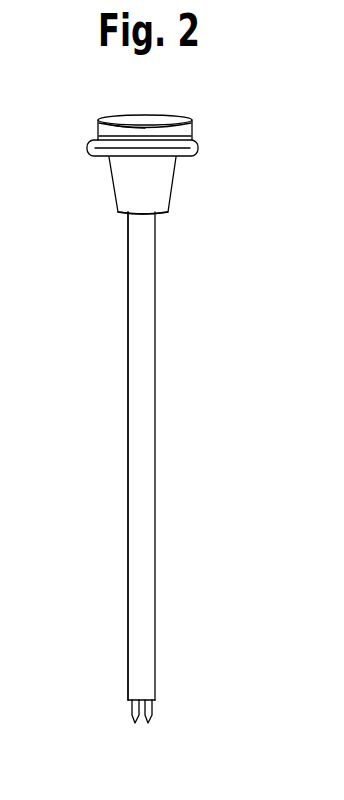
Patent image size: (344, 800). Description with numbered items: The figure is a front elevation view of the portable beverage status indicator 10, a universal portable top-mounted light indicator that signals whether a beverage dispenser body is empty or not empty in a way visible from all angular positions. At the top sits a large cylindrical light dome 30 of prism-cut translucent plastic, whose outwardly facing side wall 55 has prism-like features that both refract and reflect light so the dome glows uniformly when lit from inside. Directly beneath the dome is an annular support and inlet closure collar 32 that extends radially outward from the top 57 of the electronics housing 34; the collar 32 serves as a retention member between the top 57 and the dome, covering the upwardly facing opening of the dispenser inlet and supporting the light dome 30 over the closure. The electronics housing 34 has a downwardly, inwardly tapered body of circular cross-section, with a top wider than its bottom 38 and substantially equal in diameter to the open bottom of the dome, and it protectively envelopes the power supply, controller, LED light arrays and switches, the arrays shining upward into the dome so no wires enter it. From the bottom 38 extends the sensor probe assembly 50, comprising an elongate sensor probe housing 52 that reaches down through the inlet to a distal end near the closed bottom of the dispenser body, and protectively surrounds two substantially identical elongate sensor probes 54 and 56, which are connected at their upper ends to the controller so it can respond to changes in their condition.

The portable beverage status indicator 10 is at (194, 318).
The light dome 30 is at (173, 116).
The annular support and inlet closure collar 32 is at (198, 146).
The electronics housing 34 is at (160, 190).
The bottom 38 is at (119, 212).
The sensor probe assembly 50 is at (183, 597).
The elongate sensor probe housing 52 is at (143, 460).
The elongate sensor probe 54 is at (128, 709).
The outwardly facing side wall 55 is at (103, 138).
The elongate sensor probe 56 is at (150, 710).
The top 57 is at (128, 118).